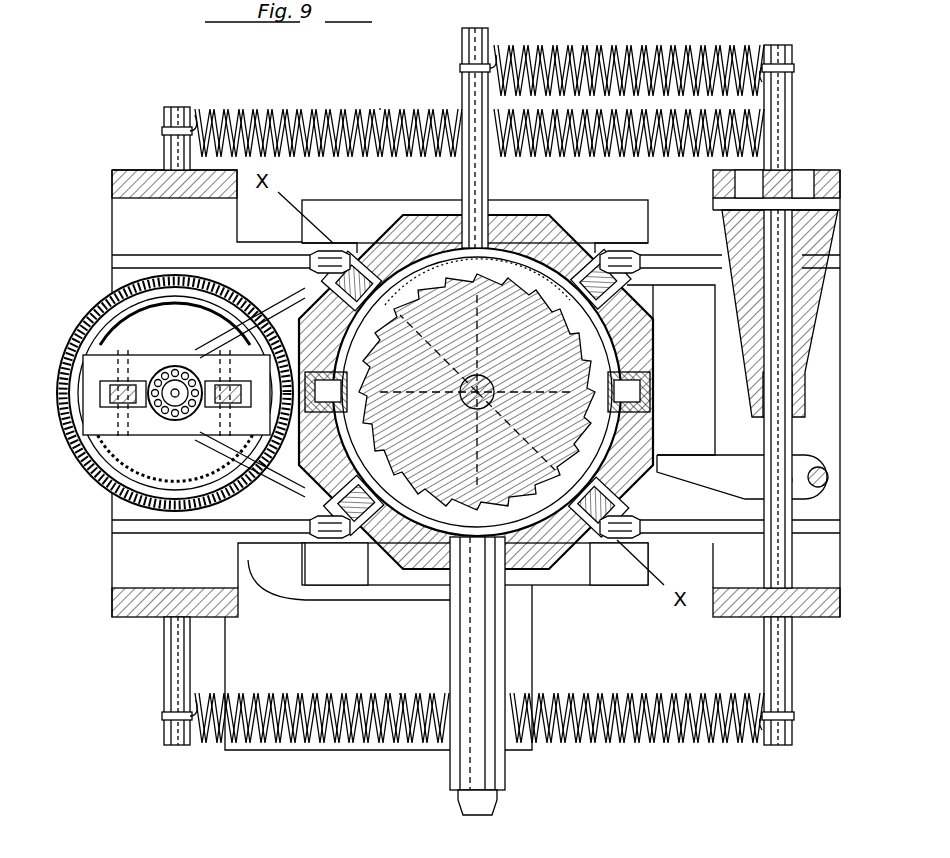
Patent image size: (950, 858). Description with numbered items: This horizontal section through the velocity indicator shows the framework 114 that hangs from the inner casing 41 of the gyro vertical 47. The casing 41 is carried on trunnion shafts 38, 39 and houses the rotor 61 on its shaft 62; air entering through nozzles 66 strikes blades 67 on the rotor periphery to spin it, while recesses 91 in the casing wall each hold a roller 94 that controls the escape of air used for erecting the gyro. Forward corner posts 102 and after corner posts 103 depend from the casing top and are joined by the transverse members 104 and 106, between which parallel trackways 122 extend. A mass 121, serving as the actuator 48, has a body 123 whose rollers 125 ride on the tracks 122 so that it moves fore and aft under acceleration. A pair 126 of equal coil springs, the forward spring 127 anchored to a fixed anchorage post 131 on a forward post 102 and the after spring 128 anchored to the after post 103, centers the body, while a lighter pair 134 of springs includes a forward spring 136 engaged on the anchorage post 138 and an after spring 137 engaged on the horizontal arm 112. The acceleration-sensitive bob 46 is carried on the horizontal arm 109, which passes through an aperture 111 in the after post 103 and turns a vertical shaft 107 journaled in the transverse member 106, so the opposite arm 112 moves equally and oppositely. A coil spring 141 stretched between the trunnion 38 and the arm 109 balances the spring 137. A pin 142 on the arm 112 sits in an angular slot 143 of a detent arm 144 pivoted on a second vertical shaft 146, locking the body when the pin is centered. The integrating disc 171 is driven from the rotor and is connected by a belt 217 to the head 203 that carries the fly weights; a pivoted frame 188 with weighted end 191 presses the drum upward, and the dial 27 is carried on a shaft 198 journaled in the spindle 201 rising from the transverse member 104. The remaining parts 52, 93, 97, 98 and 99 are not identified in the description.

The framework 114 is at (100, 150).
The fixed anchorage post 131 is at (178, 110).
The pair of equal coil springs 126 is at (437, 98).
The trunnion shaft 38 is at (464, 56).
The coil spring 141 is at (700, 48).
The horizontal arm 109 is at (792, 82).
The aperture 111 is at (814, 180).
The after corner post 103 is at (842, 184).
The forwardly extending spring 127 is at (334, 160).
The rearwardly extending spring 128 is at (708, 160).
The body 123 is at (645, 200).
The longitudinal trackways 122 is at (684, 256).
The recesses 91 is at (372, 238).
The roller bearing 93 is at (390, 232).
The roller 94 is at (528, 235).
The inner casing 41 is at (562, 238).
The upper plate 98 is at (374, 258).
The housing wall 99 is at (630, 290).
The rotor 61 is at (600, 336).
The nozzles 66 is at (648, 392).
The shaft 62 is at (492, 396).
The toothed disc 97 is at (375, 463).
The transverse member 104 is at (120, 292).
The belt 217 is at (298, 312).
The shaft 198 is at (172, 368).
The head 203 is at (80, 378).
The graduated dial 27 is at (60, 430).
The spindle 201 is at (170, 422).
The wheel assembly 52 is at (83, 488).
The disc 171 is at (296, 470).
The frame 188 is at (248, 556).
The forward corner posts 102 is at (114, 592).
The rollers 125 is at (604, 536).
The mass 121 is at (610, 598).
The actuator 48 is at (640, 597).
The gyro vertical 47 is at (595, 575).
The weight 191 is at (236, 672).
The anchorage post 138 is at (166, 692).
The forward spring 136 is at (358, 696).
The pair of opposed tension springs 134 is at (425, 680).
The coil spring 137 is at (578, 682).
The trunnion shaft 39 is at (452, 760).
The horizontal arm 112 is at (792, 694).
The detent arm 144 is at (676, 462).
The vertical shaft 107 is at (756, 412).
The angular slot 143 is at (790, 480).
The pin 142 is at (766, 477).
The second vertical shaft 146 is at (830, 477).
The acceleration-sensitive bob 46 is at (798, 342).
The transverse member 106 is at (833, 424).
The blades 67 is at (634, 478).